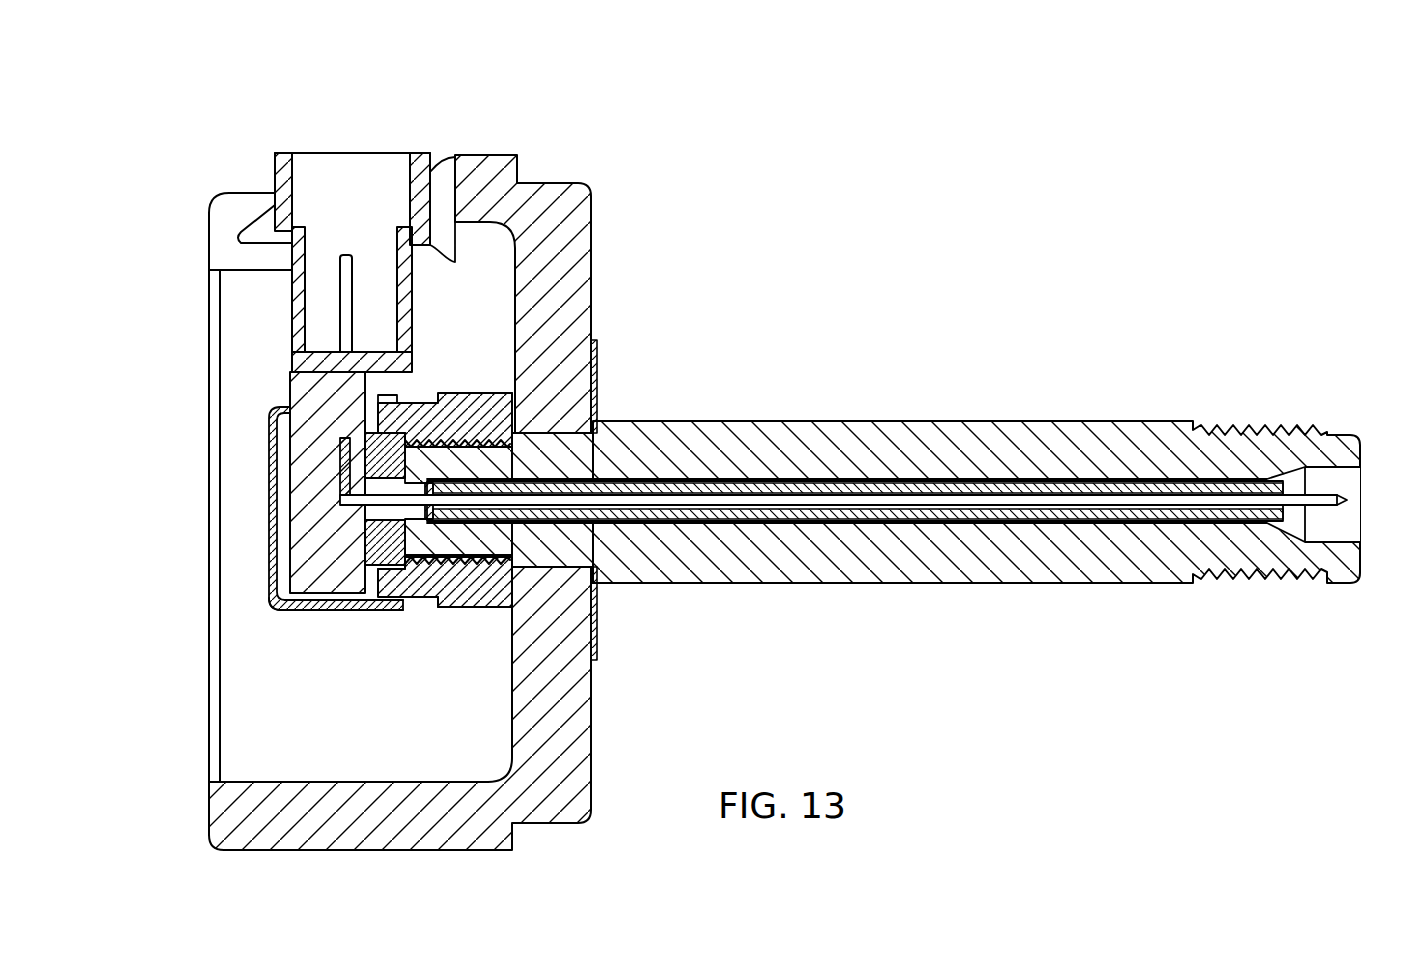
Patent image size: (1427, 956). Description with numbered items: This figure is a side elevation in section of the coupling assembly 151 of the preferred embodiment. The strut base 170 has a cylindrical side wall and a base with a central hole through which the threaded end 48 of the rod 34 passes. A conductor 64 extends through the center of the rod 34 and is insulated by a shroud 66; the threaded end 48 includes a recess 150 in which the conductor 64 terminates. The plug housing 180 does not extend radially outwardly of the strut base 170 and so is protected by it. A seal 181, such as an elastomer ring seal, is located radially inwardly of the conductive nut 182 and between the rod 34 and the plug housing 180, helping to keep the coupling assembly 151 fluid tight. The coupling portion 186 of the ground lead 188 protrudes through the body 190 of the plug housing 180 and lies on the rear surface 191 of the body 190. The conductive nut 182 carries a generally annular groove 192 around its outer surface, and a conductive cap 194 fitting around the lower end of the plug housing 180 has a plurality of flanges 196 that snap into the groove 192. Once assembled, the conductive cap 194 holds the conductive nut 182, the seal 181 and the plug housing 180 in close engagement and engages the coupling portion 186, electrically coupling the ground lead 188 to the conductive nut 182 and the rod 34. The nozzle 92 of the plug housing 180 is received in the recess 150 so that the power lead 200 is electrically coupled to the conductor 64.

The coupling assembly 151 is at (198, 177).
The strut base 170 is at (545, 167).
The plug housing 180 is at (305, 365).
The ground lead 188 is at (340, 300).
The power lead 200 is at (287, 450).
The body 190 is at (307, 395).
The rear surface 191 is at (277, 550).
The coupling portion 186 is at (280, 513).
The nozzle 92 is at (428, 403).
The threaded end 48 is at (480, 407).
The annular groove 192 is at (423, 600).
The flanges 196 is at (403, 613).
The conductive nut 182 is at (487, 597).
The rod 34 is at (1078, 425).
The recess 150 is at (585, 452).
The shroud 66 is at (1082, 520).
The conductor 64 is at (1337, 500).
The seal 181 is at (343, 557).
The conductive cap 194 is at (328, 613).